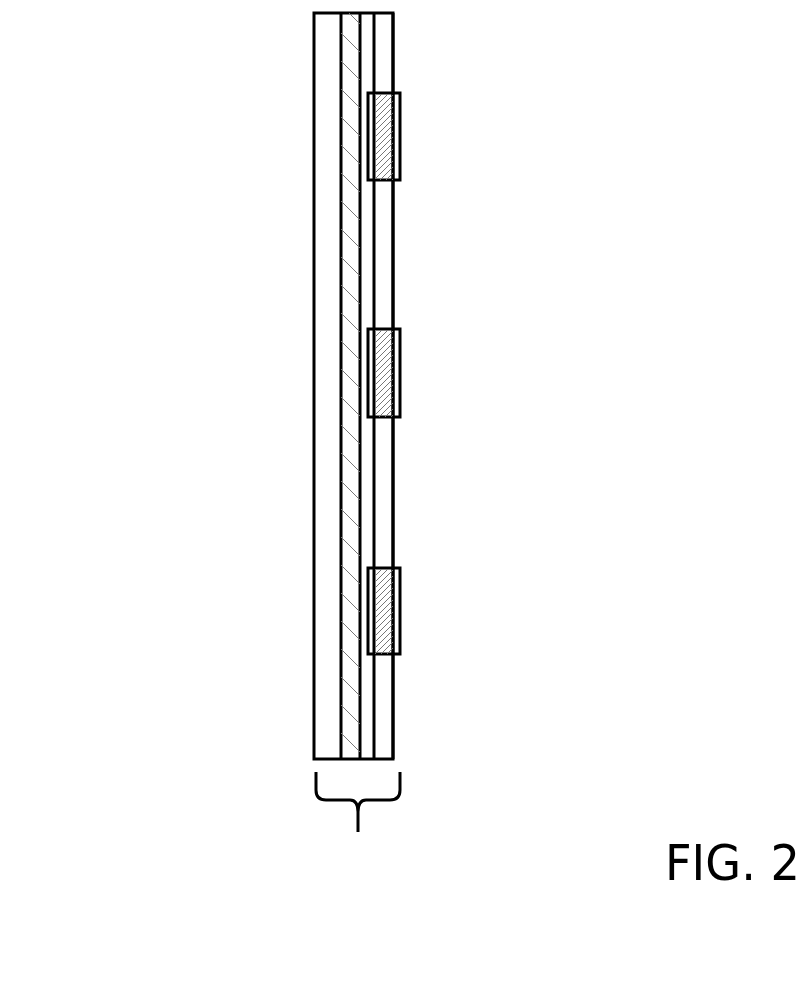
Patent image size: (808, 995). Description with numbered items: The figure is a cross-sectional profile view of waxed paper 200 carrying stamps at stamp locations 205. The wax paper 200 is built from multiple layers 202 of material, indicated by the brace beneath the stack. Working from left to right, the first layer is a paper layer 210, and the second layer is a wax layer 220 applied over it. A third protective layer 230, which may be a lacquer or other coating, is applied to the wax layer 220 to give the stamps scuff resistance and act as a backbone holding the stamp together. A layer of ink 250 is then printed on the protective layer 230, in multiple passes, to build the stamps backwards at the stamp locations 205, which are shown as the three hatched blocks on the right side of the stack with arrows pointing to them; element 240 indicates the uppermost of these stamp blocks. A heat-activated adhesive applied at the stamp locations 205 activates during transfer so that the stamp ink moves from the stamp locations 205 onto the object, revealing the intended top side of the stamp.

The waxed paper 200 is at (166, 125).
The multiple layers 202 is at (358, 821).
The stamp locations 205 is at (399, 598).
The paper layer 210 is at (316, 280).
The wax layer 220 is at (353, 257).
The protective layer 230 is at (367, 462).
The pixel element 240 is at (400, 120).
The ink layer 250 is at (388, 547).